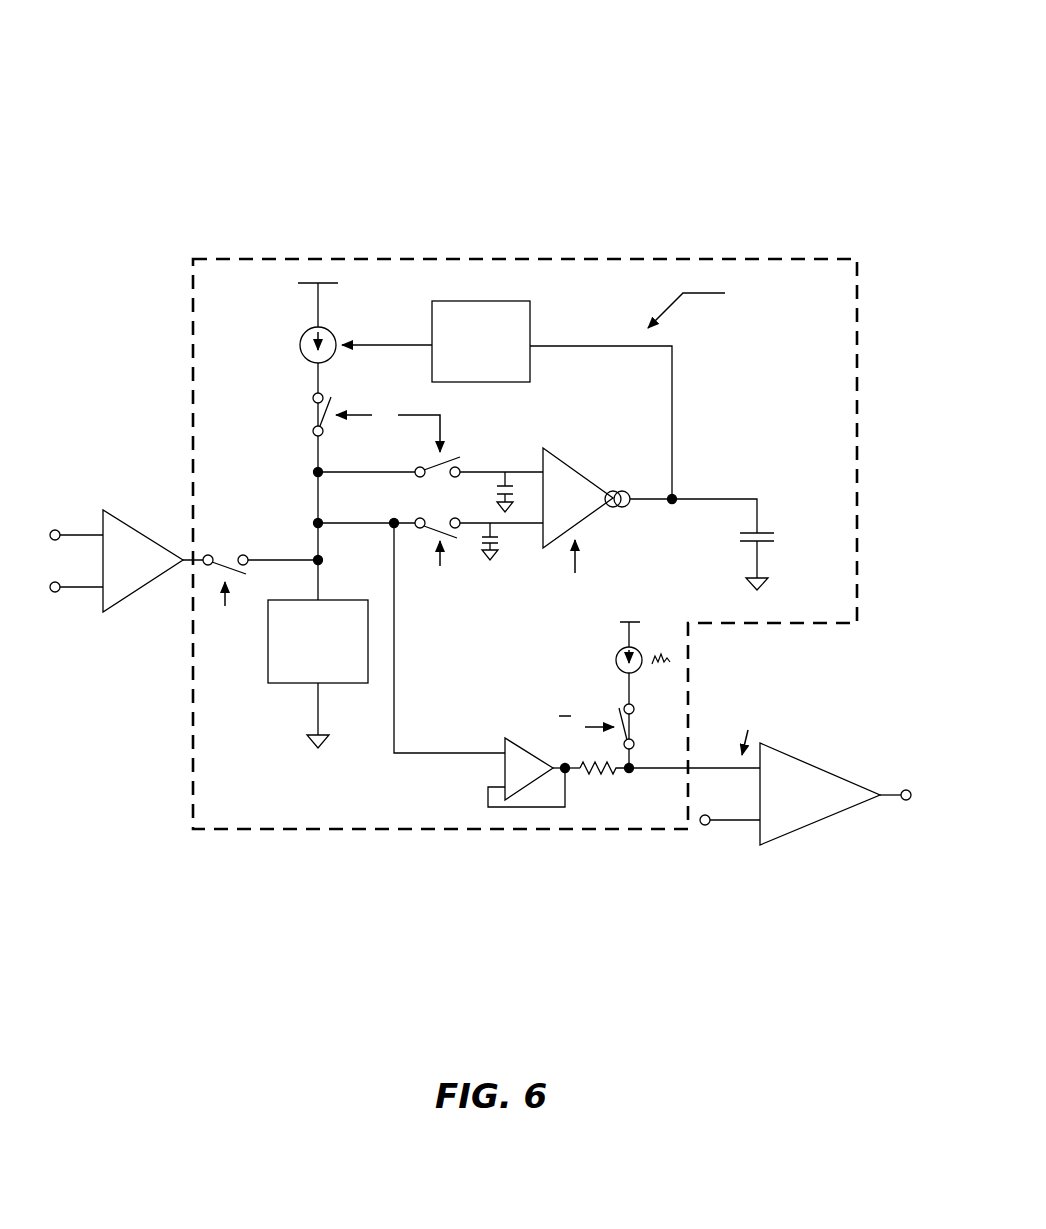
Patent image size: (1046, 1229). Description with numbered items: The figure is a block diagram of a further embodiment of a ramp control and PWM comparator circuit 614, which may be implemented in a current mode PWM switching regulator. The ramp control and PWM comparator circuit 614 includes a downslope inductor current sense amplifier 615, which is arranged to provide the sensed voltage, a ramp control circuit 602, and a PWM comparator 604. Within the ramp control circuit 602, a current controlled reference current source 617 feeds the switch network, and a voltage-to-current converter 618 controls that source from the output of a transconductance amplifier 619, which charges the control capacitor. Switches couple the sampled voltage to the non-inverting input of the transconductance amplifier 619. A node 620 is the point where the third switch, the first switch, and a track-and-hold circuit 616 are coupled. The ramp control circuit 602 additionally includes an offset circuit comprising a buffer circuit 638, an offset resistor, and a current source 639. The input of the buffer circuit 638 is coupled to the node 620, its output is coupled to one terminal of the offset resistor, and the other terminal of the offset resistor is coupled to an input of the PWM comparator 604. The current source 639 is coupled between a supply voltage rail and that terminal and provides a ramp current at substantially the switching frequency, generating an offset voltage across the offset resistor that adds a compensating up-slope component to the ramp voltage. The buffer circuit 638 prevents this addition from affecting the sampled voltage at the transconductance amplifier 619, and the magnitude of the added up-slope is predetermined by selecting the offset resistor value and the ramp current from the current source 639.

The ramp control and PWM comparator circuit 614 is at (718, 70).
The ramp control circuit 602 is at (397, 832).
The reference current source Iref 617 is at (300, 350).
The voltage to current converter 618 is at (530, 382).
The transconductance amplifier 619 is at (603, 512).
The node 620 is at (313, 520).
The downslope inductor current sense amplifier 615 is at (120, 605).
The track-and-hold circuit 616 is at (290, 683).
The buffer circuit 638 is at (520, 738).
The current source 639 is at (641, 649).
The PWM comparator 604 is at (832, 815).